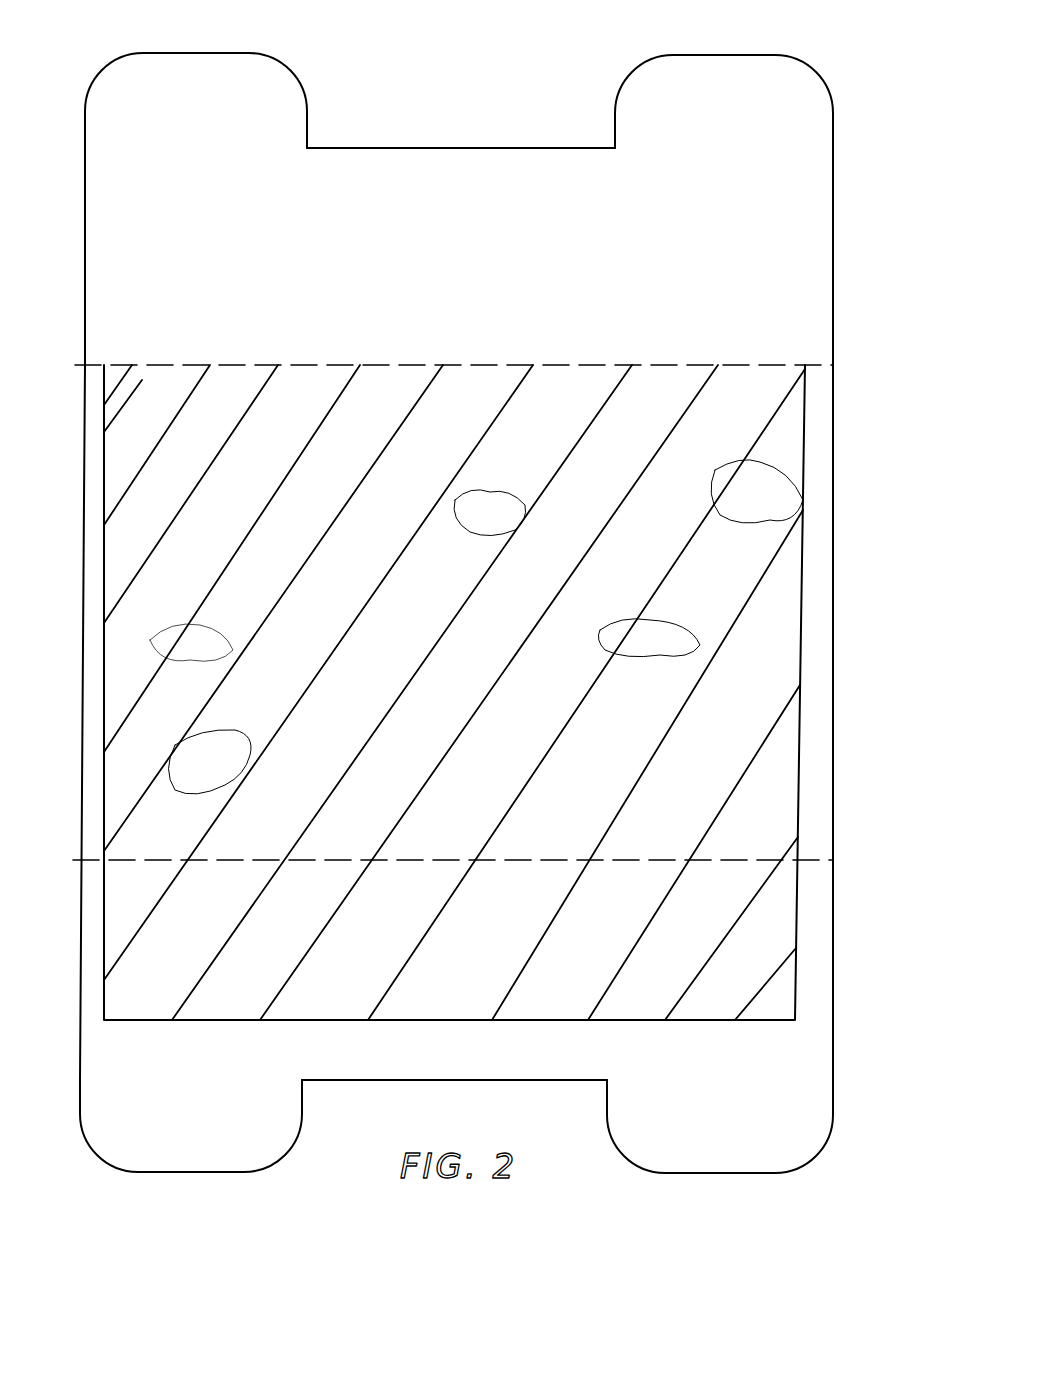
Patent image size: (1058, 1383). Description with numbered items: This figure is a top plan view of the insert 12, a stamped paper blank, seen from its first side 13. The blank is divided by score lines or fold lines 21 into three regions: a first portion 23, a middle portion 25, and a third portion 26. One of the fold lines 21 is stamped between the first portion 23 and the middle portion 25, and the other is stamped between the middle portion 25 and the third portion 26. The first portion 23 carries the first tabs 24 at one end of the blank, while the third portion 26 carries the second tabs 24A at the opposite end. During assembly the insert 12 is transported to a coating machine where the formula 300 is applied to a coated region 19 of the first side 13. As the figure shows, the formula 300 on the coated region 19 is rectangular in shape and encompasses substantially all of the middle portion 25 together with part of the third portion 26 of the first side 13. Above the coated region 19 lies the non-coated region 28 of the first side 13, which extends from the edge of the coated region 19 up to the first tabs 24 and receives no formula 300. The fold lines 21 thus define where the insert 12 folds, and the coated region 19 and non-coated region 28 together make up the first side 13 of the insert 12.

The insert 12 is at (490, 617).
The first side 13 is at (542, 238).
The coated region 19 is at (778, 902).
The fold lines 21 is at (785, 365).
The first portion 23 is at (815, 186).
The first tabs 24 is at (188, 88).
The second tabs 24A is at (178, 1157).
The middle portion 25 is at (780, 657).
The third portion 26 is at (796, 1046).
The non-coated region 28 is at (808, 236).
The formula 300 is at (775, 488).